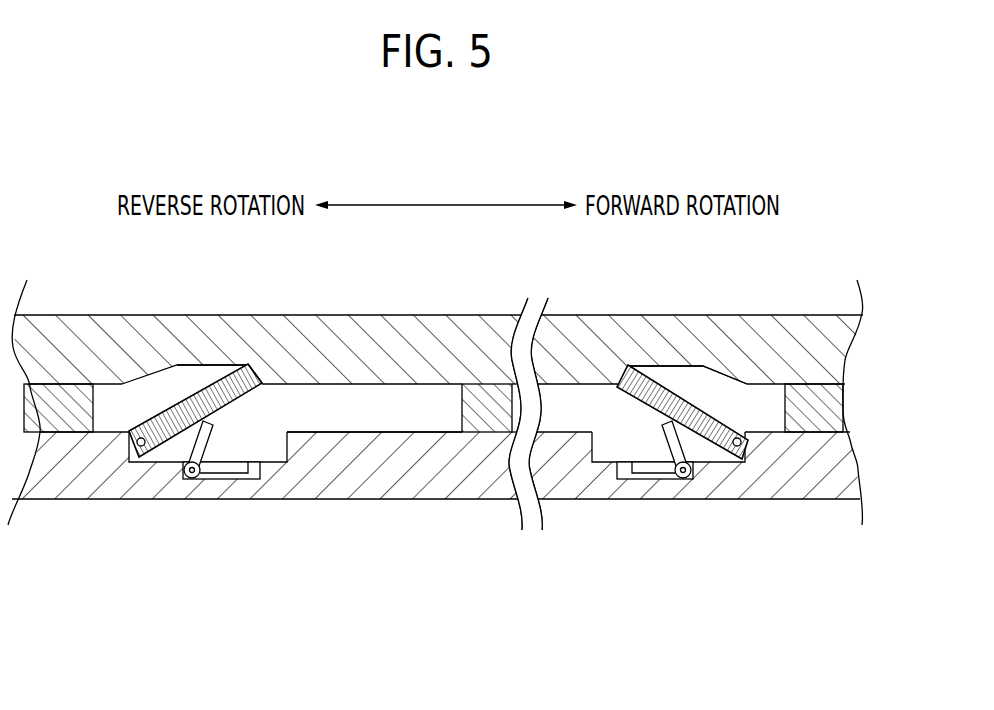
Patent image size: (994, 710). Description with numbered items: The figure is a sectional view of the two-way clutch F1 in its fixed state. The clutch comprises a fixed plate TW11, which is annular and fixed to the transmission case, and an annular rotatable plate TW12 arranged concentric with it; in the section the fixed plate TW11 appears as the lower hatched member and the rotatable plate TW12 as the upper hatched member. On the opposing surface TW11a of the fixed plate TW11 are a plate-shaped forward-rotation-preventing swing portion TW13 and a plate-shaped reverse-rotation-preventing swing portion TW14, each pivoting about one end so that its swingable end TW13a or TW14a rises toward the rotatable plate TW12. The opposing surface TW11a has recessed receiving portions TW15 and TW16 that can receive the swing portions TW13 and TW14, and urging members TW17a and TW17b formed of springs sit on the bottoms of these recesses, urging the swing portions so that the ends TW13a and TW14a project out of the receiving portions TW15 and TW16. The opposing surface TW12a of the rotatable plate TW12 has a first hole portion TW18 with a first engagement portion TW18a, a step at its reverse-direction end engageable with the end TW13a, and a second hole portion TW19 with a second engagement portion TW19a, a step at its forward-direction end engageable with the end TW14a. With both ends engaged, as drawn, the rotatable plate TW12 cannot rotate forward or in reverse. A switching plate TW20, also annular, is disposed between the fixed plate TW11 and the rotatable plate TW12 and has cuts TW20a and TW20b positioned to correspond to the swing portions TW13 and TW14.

The two-way clutch F1 is at (156, 145).
The fixed plate TW11 is at (306, 488).
The opposing surface of the fixed plate TW11a is at (400, 445).
The rotatable plate TW12 is at (764, 345).
The opposing surface of the rotatable plate TW12a is at (110, 397).
The forward-rotation-preventing swing portion TW13 is at (727, 447).
The swingable end of the forward-rotation-preventing swing portion TW13a is at (607, 368).
The reverse-rotation-preventing swing portion TW14 is at (157, 456).
The swingable end of the reverse-rotation-preventing swing portion TW14a is at (270, 376).
The receiving portion TW15 is at (607, 448).
The receiving portion TW16 is at (248, 448).
The urging member TW17a is at (678, 481).
The urging member TW17b is at (193, 479).
The first hole portion TW18 is at (704, 365).
The first engagement portion TW18a is at (650, 365).
The second hole portion TW19 is at (186, 368).
The second engagement portion TW19a is at (233, 364).
The switching plate TW20 is at (487, 400).
The cut TW20a is at (769, 417).
The cut TW20b is at (362, 433).